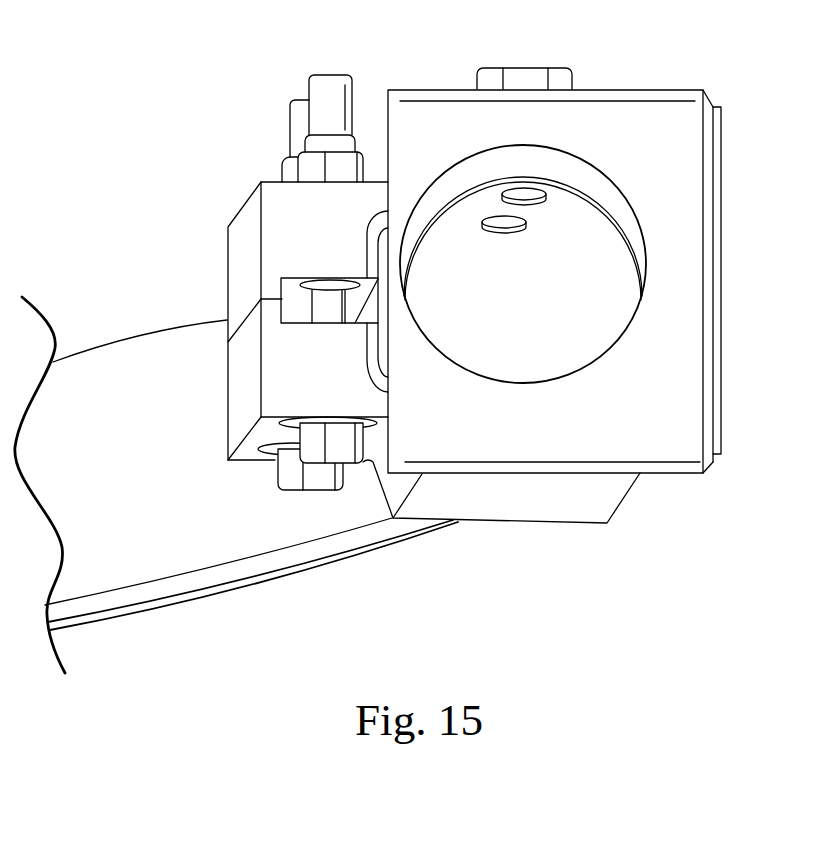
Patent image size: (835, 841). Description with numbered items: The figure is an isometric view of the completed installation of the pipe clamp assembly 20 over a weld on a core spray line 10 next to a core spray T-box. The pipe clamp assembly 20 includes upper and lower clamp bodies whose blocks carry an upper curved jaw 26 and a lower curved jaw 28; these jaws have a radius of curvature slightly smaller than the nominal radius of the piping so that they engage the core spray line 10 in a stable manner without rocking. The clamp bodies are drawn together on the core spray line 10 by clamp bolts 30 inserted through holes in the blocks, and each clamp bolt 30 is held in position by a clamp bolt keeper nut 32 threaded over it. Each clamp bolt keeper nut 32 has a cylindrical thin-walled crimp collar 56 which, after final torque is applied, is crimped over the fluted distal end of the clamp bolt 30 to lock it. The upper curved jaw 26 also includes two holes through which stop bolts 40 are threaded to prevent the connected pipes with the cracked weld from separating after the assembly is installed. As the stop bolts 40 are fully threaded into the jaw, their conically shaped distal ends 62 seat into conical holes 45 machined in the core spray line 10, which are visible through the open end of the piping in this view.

The core spray line 10 is at (143, 588).
The pipe clamp assembly 20 is at (693, 175).
The upper curved jaw 26 is at (245, 259).
The lower curved jaw 28 is at (252, 366).
The clamp bolt 30 is at (285, 477).
The clamp bolt keeper nut 32 is at (310, 168).
The stop bolt 40 is at (529, 76).
The conical hole 45 is at (520, 187).
The crimp collar 56 is at (325, 83).
The conically shaped distal end 62 is at (510, 230).